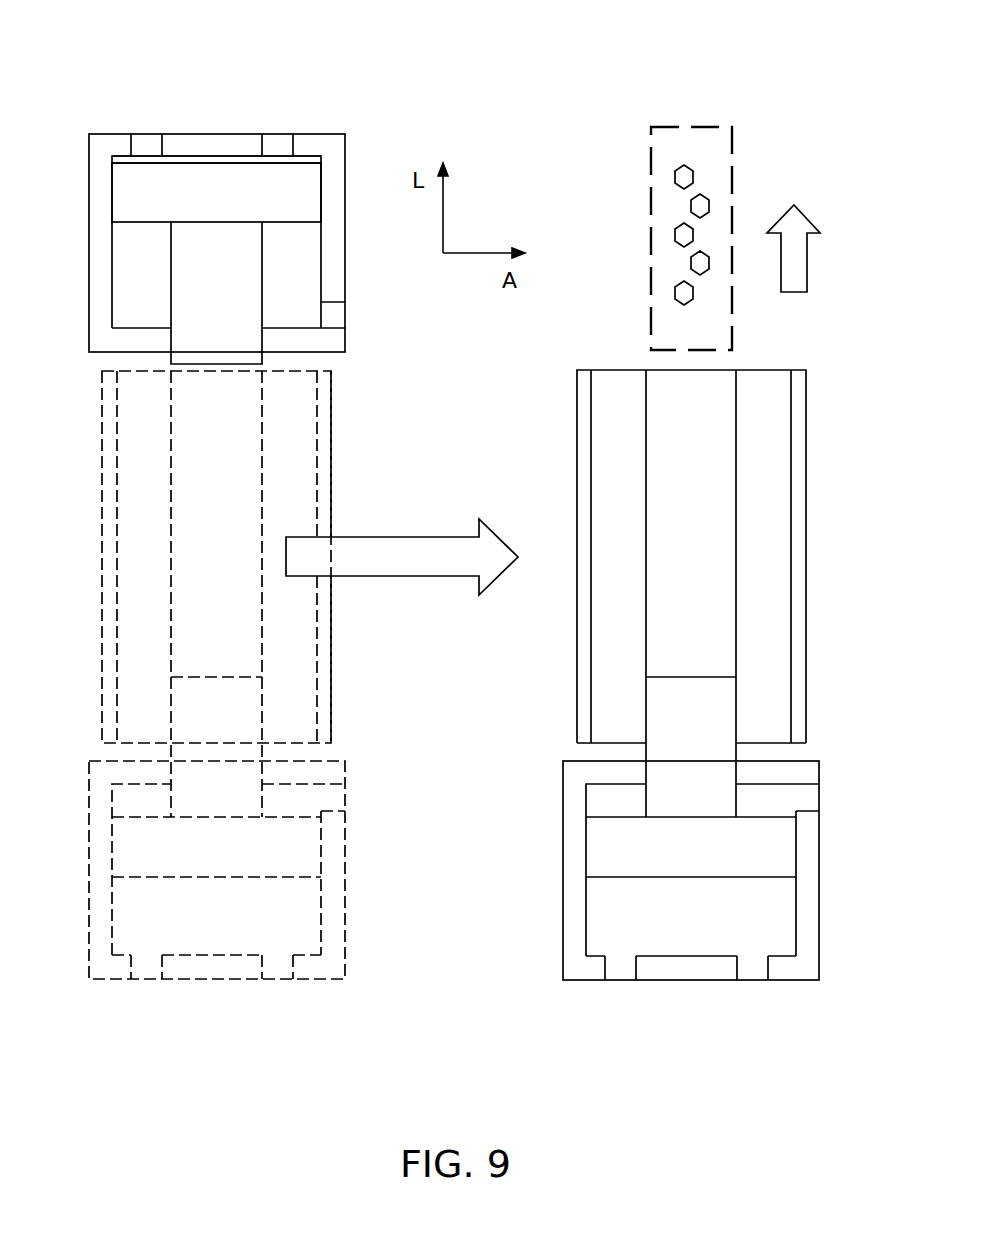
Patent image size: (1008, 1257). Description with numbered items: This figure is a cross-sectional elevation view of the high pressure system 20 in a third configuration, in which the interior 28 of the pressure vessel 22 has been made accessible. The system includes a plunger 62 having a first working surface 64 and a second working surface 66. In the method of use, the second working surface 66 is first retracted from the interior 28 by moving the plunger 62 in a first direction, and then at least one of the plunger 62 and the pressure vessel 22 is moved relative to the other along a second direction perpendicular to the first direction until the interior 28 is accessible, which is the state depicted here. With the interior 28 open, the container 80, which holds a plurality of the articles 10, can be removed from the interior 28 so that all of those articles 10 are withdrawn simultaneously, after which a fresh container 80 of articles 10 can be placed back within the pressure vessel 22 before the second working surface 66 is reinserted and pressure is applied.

The article 10 is at (674, 173).
The high pressure system 20 is at (735, 491).
The pressure vessel 22 is at (826, 640).
The interior 28 is at (707, 480).
The plunger 62 is at (130, 190).
The first working surface 64 is at (138, 162).
The second working surface 66 is at (241, 366).
The container 80 is at (650, 302).